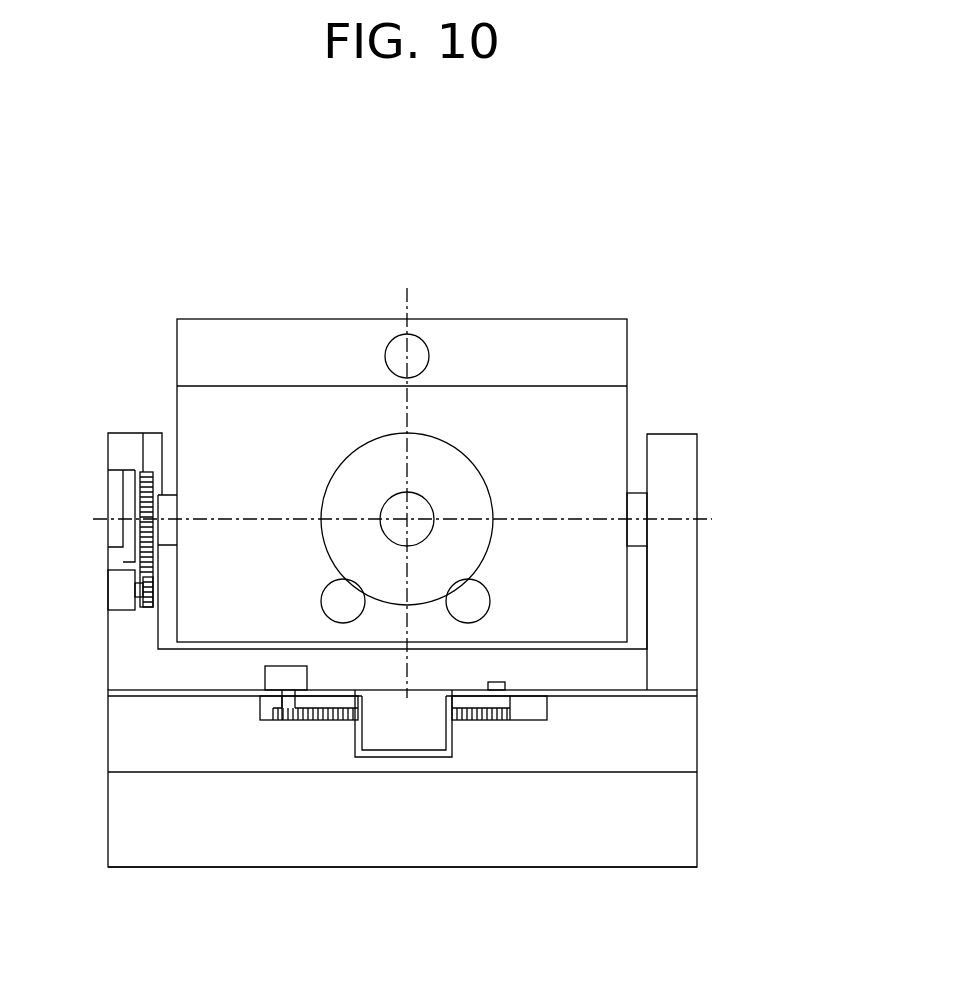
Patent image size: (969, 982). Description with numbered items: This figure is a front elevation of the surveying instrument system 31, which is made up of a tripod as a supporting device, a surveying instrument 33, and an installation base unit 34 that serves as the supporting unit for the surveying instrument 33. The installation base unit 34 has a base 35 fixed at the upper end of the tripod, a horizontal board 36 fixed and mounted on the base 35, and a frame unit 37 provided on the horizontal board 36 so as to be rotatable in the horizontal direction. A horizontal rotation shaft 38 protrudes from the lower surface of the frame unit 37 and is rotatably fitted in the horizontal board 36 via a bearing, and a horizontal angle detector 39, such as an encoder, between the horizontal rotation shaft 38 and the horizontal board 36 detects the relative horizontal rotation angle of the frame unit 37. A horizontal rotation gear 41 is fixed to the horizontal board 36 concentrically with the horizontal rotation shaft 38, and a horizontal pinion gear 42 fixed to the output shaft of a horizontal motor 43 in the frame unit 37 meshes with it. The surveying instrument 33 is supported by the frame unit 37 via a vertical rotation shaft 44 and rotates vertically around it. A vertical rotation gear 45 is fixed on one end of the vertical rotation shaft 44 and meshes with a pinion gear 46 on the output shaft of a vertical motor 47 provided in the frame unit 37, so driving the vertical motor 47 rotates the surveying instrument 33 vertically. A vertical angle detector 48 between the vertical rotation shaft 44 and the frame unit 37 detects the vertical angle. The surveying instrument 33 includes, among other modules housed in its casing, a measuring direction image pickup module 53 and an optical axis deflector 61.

The surveying instrument system 31 is at (363, 285).
The surveying instrument 33 is at (522, 319).
The installation base unit 34 is at (410, 767).
The base 35 is at (698, 837).
The horizontal board 36 is at (698, 727).
The frame unit 37 is at (680, 434).
The horizontal rotation shaft 38 is at (452, 737).
The horizontal angle detector 39 is at (514, 682).
The horizontal rotation gear 41 is at (512, 708).
The horizontal pinion gear 42 is at (273, 710).
The horizontal motor 43 is at (265, 673).
The vertical rotation shaft 44 is at (637, 493).
The vertical rotation gear 45 is at (143, 433).
The pinion gear 46 is at (152, 610).
The vertical motor 47 is at (120, 613).
The vertical angle detector 48 is at (124, 467).
The measuring direction image pickup module 53 is at (429, 353).
The optical axis deflector 61 is at (494, 542).